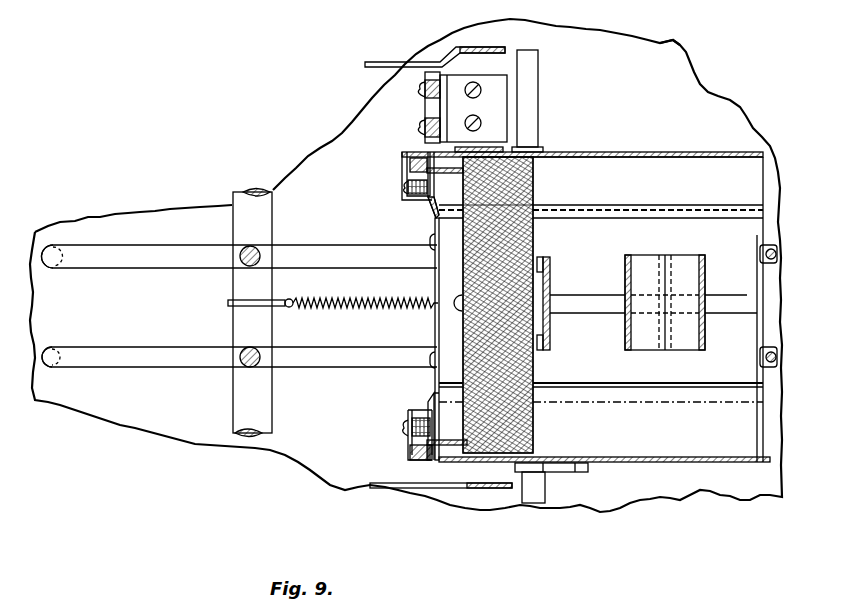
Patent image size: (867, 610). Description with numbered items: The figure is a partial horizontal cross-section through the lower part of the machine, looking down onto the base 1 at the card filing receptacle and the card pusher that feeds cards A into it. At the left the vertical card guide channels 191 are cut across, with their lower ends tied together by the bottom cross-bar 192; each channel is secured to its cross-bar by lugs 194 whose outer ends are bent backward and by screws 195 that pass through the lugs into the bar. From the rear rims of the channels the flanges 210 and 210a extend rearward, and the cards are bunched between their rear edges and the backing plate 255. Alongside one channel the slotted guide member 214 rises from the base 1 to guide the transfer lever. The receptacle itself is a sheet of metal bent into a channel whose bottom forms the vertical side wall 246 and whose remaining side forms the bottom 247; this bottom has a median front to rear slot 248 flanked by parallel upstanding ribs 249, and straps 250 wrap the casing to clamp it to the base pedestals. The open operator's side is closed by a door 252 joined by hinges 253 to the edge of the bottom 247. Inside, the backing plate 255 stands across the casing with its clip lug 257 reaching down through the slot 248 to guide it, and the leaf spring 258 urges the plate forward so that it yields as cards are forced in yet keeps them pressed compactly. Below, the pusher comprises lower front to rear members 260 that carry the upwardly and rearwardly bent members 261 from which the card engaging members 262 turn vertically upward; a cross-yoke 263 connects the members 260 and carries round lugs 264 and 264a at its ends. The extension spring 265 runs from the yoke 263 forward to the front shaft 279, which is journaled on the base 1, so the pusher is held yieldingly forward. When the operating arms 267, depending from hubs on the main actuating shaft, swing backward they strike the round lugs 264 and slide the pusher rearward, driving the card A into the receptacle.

The base 1 is at (665, 52).
The channels 191 is at (412, 460).
The bottom cross-bar 192 is at (432, 400).
The lugs 194 is at (410, 418).
The screws 195 is at (405, 430).
The flange 210 is at (448, 445).
The flange 210a is at (437, 210).
The guide member 214 is at (422, 100).
The vertical side wall 246 is at (655, 152).
The bottom 247 is at (438, 280).
The slot 248 is at (720, 300).
The ribs 249 is at (627, 216).
The straps 250 is at (486, 145).
The door 252 is at (690, 462).
The hinges 253 is at (592, 470).
The backing plate 255 is at (535, 185).
The clip lug 257 is at (540, 291).
The spring 258 is at (675, 262).
The lower front to rear members 260 is at (369, 247).
The bent members 261 is at (168, 247).
The card engaging members 262 is at (278, 244).
The cross-yoke 263 is at (548, 150).
The round lug 264 is at (545, 490).
The round lug 264a is at (538, 108).
The extension spring 265 is at (348, 300).
The operating arms 267 is at (393, 62).
The shaft 279 is at (232, 390).
The card A is at (510, 254).